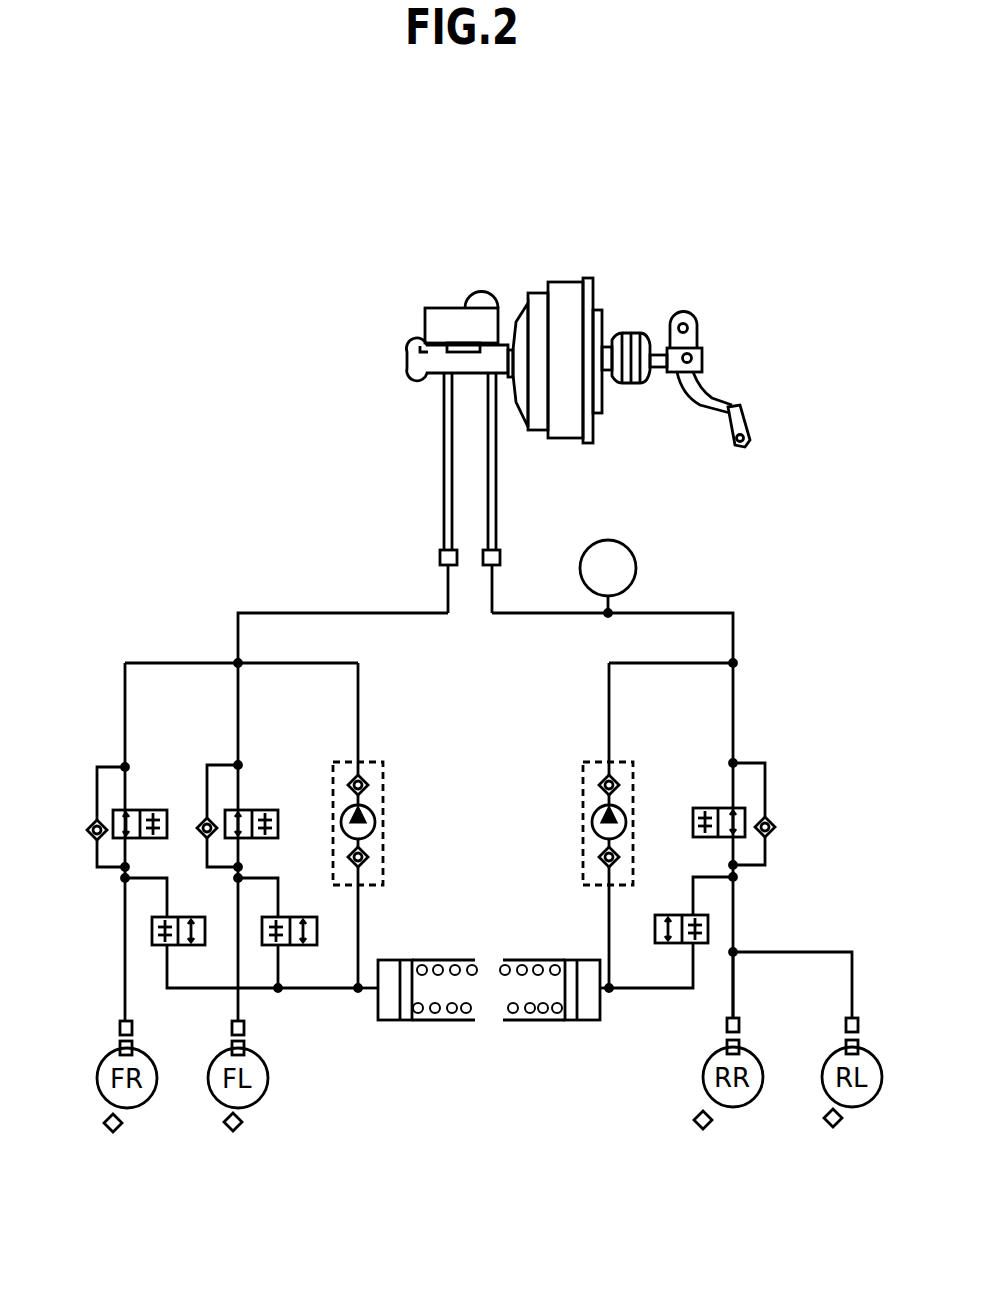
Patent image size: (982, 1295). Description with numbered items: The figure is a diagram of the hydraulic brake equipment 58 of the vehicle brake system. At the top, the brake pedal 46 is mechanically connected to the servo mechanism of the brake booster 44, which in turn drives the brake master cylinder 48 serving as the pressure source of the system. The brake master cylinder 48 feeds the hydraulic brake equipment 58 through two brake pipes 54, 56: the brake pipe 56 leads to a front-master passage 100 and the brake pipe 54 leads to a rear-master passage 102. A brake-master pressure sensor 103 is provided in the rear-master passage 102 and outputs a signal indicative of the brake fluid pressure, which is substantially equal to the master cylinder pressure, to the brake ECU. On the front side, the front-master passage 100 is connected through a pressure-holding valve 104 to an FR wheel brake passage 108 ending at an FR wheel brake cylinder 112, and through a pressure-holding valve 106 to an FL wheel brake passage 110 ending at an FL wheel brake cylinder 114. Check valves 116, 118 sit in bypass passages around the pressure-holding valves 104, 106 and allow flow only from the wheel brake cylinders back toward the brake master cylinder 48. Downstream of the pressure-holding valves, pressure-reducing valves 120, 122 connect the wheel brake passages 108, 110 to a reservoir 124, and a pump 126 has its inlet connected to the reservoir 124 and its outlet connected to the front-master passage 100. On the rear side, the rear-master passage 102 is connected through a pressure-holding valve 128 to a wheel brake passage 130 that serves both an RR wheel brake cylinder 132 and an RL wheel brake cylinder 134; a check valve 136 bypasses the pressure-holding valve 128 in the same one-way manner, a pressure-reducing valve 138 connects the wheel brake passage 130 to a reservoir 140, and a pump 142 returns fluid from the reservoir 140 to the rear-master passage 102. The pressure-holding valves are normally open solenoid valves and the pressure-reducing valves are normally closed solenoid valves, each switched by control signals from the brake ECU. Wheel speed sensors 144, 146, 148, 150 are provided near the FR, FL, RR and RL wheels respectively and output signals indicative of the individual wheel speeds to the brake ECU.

The brake booster 44 is at (577, 283).
The brake pedal 46 is at (740, 410).
The brake master cylinder 48 is at (407, 368).
The brake pipe 54 is at (497, 485).
The brake pipe 56 is at (443, 474).
The hydraulic brake equipment 58 is at (168, 528).
The front-master passage 100 is at (290, 613).
The rear-master passage 102 is at (510, 613).
The brake-master pressure sensor 103 is at (637, 553).
The pressure-holding valve 104 is at (140, 810).
The pressure-holding valve 106 is at (258, 810).
The FR wheel brake passage 108 is at (125, 932).
The FL wheel brake passage 110 is at (238, 920).
The FR wheel brake cylinder 112 is at (118, 1047).
The FL wheel brake cylinder 114 is at (245, 1048).
The check valve 116 is at (97, 840).
The check valve 118 is at (205, 840).
The pressure-reducing valve 120 is at (173, 945).
The pressure-reducing valve 122 is at (285, 945).
The reservoir 124 is at (432, 1022).
The pump 126 is at (386, 822).
The pressure-holding valve 128 is at (703, 808).
The wheel brake passage 130 is at (735, 905).
The RR wheel brake cylinder 132 is at (728, 1047).
The RL wheel brake cylinder 134 is at (845, 1047).
The check valve 136 is at (775, 825).
The pressure-reducing valve 138 is at (667, 915).
The reservoir 140 is at (535, 1022).
The pump 142 is at (580, 822).
The wheel speed sensor 144 is at (122, 1128).
The wheel speed sensor 146 is at (242, 1120).
The wheel speed sensor 148 is at (695, 1120).
The wheel speed sensor 150 is at (823, 1120).